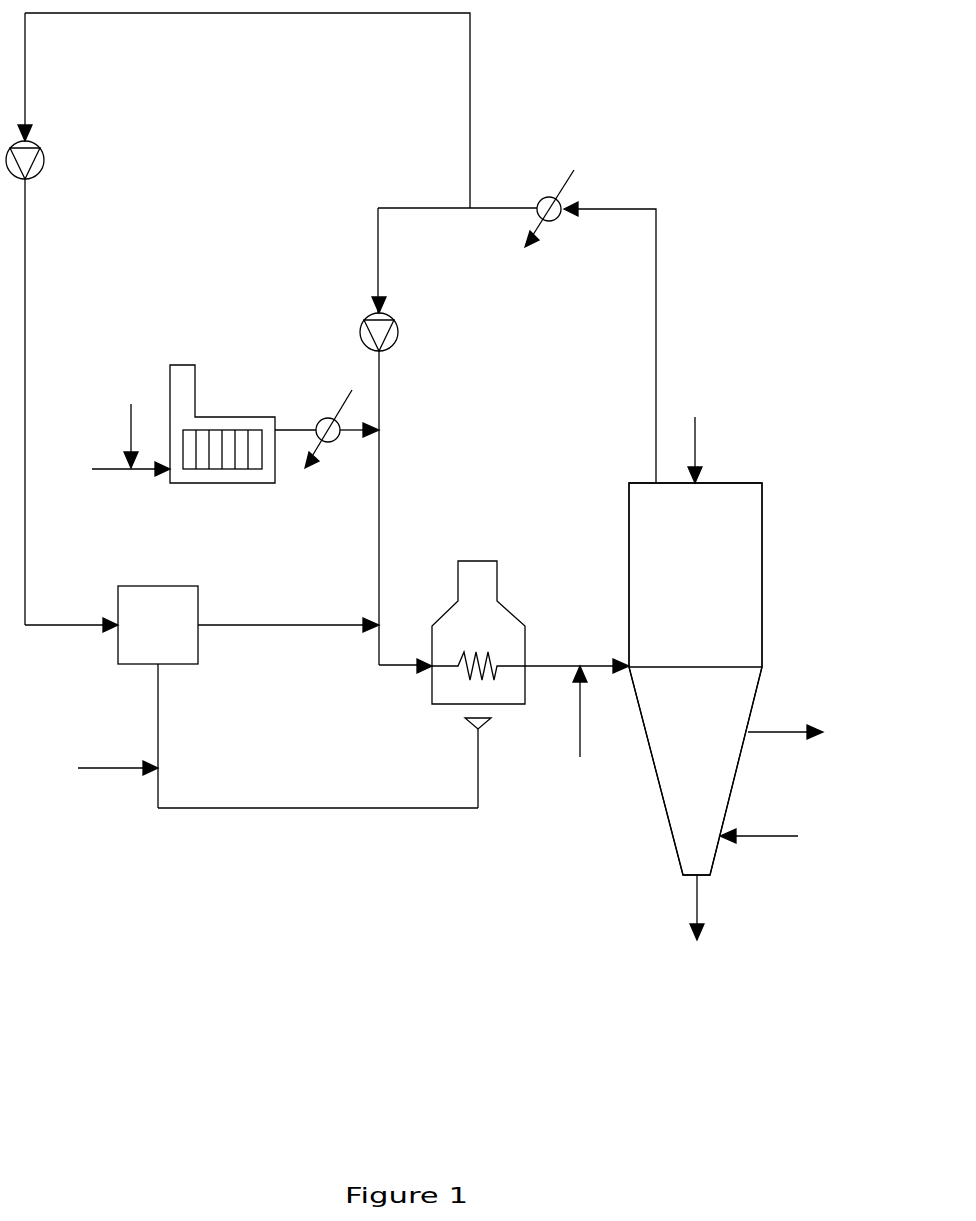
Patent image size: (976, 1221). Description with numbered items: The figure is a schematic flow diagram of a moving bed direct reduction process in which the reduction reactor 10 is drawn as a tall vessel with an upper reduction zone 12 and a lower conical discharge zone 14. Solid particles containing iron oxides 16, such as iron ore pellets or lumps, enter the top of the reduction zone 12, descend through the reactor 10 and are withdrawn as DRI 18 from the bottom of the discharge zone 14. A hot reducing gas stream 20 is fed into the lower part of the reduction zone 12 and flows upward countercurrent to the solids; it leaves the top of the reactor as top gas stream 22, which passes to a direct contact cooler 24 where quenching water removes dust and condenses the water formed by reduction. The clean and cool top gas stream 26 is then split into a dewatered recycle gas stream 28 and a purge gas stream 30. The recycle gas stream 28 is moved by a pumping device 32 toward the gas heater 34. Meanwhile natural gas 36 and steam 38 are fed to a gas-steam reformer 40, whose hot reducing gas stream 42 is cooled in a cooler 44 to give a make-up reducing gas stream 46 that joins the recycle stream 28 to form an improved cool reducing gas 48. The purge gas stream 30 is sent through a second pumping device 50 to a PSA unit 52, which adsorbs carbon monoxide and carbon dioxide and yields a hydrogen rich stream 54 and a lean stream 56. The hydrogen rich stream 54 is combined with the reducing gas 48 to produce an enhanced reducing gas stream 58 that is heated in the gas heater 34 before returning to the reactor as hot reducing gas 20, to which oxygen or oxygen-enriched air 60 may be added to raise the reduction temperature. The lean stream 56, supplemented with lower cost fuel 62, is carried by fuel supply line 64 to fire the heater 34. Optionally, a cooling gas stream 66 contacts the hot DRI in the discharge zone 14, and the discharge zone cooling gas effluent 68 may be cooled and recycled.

The reduction reactor 10 is at (809, 469).
The reduction zone 12 is at (722, 612).
The discharge zone 14 is at (722, 754).
The solid particles containing iron oxides 16 is at (695, 452).
The DRI 18 is at (697, 895).
The hot reducing gas stream 20 is at (604, 664).
The top gas stream 22 is at (656, 298).
The direct contact cooler 24 is at (546, 197).
The clean and cool top gas stream 26 is at (506, 208).
The dewatered recycle gas stream 28 is at (418, 208).
The purge gas stream 30 is at (470, 66).
The pumping device 32 is at (360, 334).
The gas heater 34 is at (478, 560).
The natural gas 36 is at (118, 471).
The steam 38 is at (130, 424).
The gas-steam reformer 40 is at (183, 365).
The hot reducing gas stream 42 is at (298, 430).
The cooler 44 is at (332, 418).
The make-up reducing gas stream 46 is at (345, 440).
The improved cool reducing gas 48 is at (381, 528).
The second pumping device 50 is at (44, 158).
The PSA unit 52 is at (118, 666).
The hydrogen rich stream 54 is at (272, 627).
The lean stream 56 is at (158, 720).
The enhanced reducing gas stream 58 is at (380, 668).
The oxygen or oxygen-enriched air 60 is at (580, 730).
The supplemental fuel 62 is at (116, 770).
The fuel supply line 64 is at (324, 810).
The cooling gas stream 66 is at (776, 838).
The discharge zone cooling gas effluent 68 is at (776, 730).